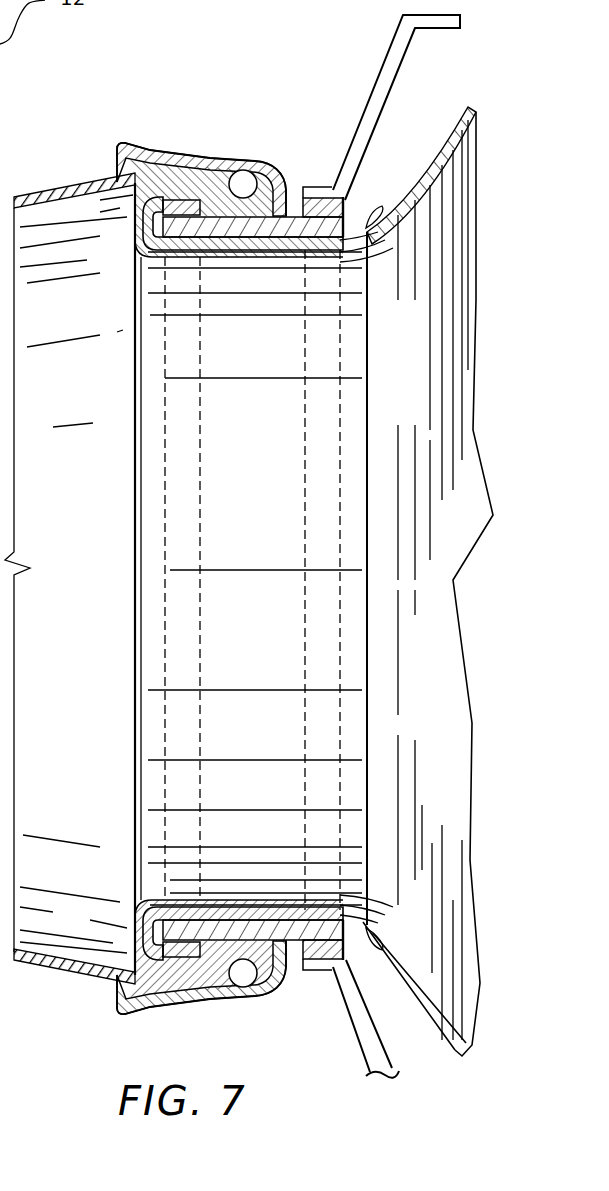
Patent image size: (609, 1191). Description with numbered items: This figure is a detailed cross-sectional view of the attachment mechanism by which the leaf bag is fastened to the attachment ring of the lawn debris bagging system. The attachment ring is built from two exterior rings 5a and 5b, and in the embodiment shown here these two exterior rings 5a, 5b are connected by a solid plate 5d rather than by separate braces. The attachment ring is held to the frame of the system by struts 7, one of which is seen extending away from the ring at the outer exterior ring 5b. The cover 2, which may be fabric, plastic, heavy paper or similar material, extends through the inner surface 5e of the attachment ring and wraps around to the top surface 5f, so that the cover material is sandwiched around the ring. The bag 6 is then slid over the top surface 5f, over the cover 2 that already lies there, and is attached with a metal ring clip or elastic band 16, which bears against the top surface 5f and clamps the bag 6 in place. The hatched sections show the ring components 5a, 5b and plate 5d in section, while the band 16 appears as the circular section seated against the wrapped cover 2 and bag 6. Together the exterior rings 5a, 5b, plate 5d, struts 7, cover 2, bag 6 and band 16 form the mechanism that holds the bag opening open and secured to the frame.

The cover 2 is at (423, 404).
The exterior ring 5a is at (177, 205).
The exterior ring 5b is at (317, 198).
The solid plate 5d is at (262, 234).
The inner surface 5e is at (215, 242).
The top surface 5f is at (295, 963).
The bag 6 is at (86, 190).
The strut 7 is at (382, 83).
The metal ring clip or elastic band 16 is at (241, 183).